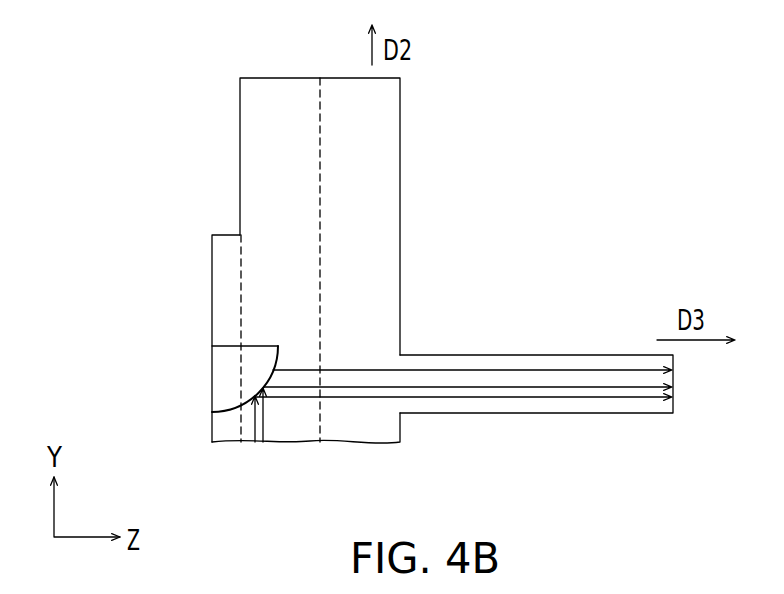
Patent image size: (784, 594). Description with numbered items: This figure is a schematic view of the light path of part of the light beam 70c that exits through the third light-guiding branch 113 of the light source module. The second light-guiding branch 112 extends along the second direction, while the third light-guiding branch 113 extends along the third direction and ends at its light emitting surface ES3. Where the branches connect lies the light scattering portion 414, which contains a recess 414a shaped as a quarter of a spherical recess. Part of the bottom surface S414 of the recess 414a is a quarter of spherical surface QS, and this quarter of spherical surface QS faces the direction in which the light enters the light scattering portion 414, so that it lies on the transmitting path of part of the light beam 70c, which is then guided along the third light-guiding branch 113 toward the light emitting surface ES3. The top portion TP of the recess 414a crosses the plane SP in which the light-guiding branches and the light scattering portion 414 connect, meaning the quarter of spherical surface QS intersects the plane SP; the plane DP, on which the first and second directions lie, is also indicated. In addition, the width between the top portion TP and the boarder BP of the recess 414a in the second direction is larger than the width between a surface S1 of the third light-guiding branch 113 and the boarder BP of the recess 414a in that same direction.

The second light-guiding branch 112 is at (378, 136).
The third light-guiding branch 113 is at (627, 362).
The light scattering portion 414 is at (181, 224).
The recess 414a is at (221, 373).
The bottom surface of the recess S414 is at (286, 363).
The light beam 70c is at (565, 397).
The top portion of the recess TP is at (262, 360).
The plane SP is at (241, 257).
The plane DP is at (320, 257).
The surface of the third light-guiding branch S1 is at (529, 348).
The light emitting surface ES3 is at (683, 383).
The boarder of the recess BP is at (203, 410).
The quarter of spherical surface QS is at (223, 417).